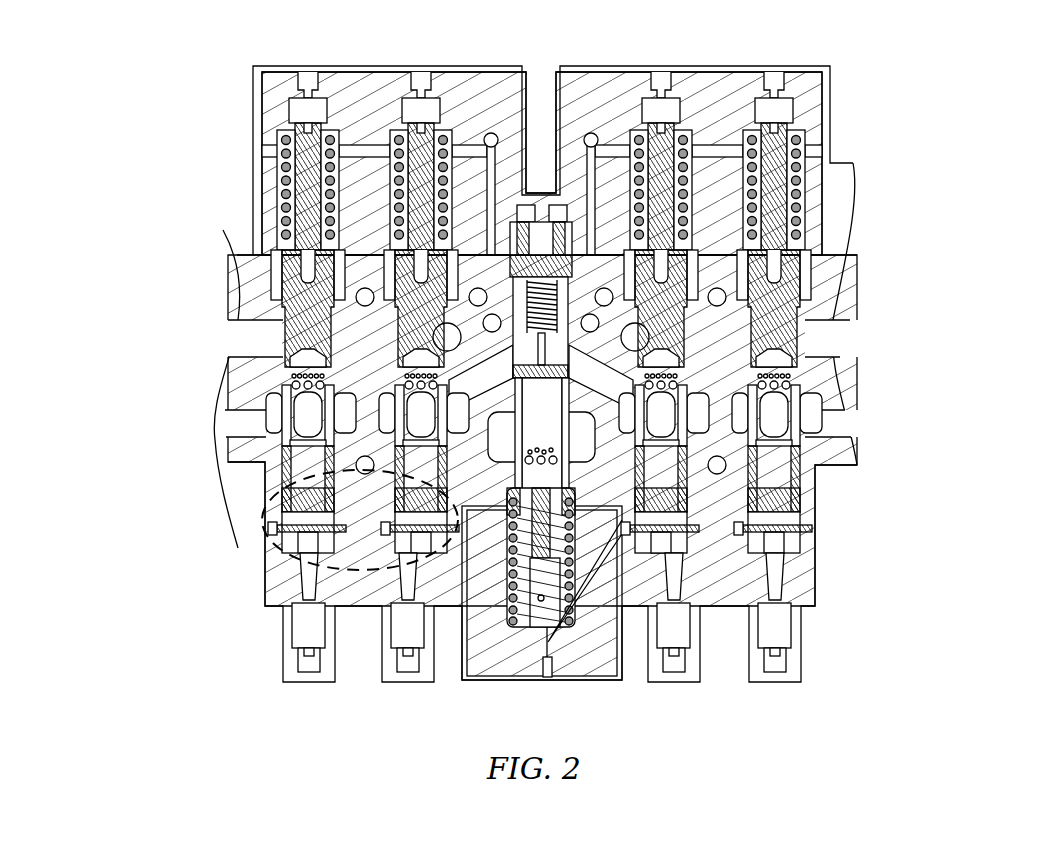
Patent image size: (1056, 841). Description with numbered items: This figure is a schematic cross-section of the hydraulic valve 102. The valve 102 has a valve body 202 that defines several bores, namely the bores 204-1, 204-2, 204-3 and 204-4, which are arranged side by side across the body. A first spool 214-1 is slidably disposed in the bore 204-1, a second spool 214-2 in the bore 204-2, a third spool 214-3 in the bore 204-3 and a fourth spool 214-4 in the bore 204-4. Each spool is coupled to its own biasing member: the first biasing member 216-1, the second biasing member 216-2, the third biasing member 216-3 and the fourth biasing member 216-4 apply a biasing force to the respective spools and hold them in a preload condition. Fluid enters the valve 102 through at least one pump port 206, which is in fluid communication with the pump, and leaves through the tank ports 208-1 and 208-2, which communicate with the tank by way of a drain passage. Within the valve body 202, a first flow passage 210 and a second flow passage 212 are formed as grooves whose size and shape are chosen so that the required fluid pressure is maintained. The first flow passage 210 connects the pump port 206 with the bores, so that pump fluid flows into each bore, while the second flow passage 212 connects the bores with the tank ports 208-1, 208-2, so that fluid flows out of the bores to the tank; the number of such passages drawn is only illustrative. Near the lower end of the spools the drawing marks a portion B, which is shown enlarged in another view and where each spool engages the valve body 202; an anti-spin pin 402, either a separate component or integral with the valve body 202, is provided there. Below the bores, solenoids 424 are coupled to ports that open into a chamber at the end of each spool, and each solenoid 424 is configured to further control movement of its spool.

The valve 102 is at (968, 99).
The valve body 202 is at (735, 85).
The bore 204-1 is at (280, 140).
The bore 204-2 is at (393, 138).
The bore 204-3 is at (692, 138).
The bore 204-4 is at (805, 137).
The first biasing member 216-1 is at (280, 166).
The second biasing member 216-2 is at (452, 140).
The third biasing member 216-3 is at (632, 140).
The fourth biasing member 216-4 is at (805, 195).
The tank port 208-1 is at (248, 338).
The tank port 208-2 is at (828, 338).
The second flow passage 212 is at (360, 337).
The first spool 214-1 is at (280, 460).
The second spool 214-2 is at (396, 490).
The third spool 214-3 is at (683, 487).
The fourth spool 214-4 is at (800, 463).
The first flow passage 210 is at (300, 468).
The pump port 206 is at (580, 500).
The anti-spin pin 402 is at (418, 535).
The solenoid 424 is at (300, 633).
The portion B is at (265, 560).